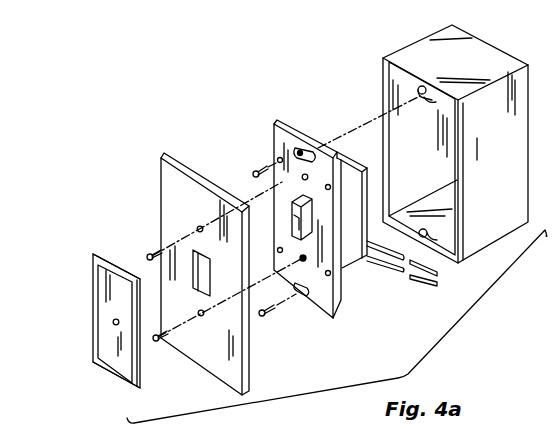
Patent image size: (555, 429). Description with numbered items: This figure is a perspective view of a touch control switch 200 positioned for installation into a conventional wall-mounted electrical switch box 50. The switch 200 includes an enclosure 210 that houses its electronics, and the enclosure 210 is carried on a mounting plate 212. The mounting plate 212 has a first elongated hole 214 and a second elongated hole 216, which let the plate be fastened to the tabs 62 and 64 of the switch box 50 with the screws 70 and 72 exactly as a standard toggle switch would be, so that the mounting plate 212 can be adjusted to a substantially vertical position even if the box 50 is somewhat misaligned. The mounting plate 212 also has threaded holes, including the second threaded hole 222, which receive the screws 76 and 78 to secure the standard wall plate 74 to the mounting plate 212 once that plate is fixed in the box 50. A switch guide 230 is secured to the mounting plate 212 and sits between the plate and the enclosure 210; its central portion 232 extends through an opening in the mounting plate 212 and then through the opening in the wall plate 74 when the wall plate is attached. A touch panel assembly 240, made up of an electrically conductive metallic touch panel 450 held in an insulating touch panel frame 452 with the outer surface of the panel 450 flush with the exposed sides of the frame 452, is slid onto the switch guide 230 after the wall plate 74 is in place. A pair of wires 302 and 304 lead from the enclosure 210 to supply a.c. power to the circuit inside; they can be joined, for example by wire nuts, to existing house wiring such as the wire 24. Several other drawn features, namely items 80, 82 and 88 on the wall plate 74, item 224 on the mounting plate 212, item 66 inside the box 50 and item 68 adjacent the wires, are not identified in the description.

The touch control switch 200 is at (236, 106).
The standard wall plate 74 is at (172, 155).
The upper screw hole 80 is at (200, 226).
The lower screw hole 82 is at (201, 318).
The toggle opening 88 is at (205, 280).
The screw 76 is at (150, 254).
The screw 78 is at (156, 342).
The touch panel 450 is at (96, 287).
The touch panel frame 452 is at (112, 377).
The touch panel assembly 240 is at (100, 262).
The enclosure 210 is at (348, 262).
The mounting plate 212 is at (283, 122).
The first elongated hole 214 is at (300, 150).
The second threaded hole 222 is at (306, 175).
The central portion 232 is at (290, 207).
The second elongated hole 216 is at (299, 298).
The pivot point 224 is at (305, 261).
The screw 70 is at (256, 170).
The screw 72 is at (263, 317).
The switch guide 230 is at (368, 190).
The wire 304 is at (388, 266).
The wire 302 is at (414, 284).
The wire ends 68 is at (438, 279).
The electrical switch box 50 is at (487, 52).
The upper mounting ear 66 is at (422, 86).
The tab 62 is at (432, 94).
The tab 64 is at (430, 234).
The wire 24 is at (539, 343).